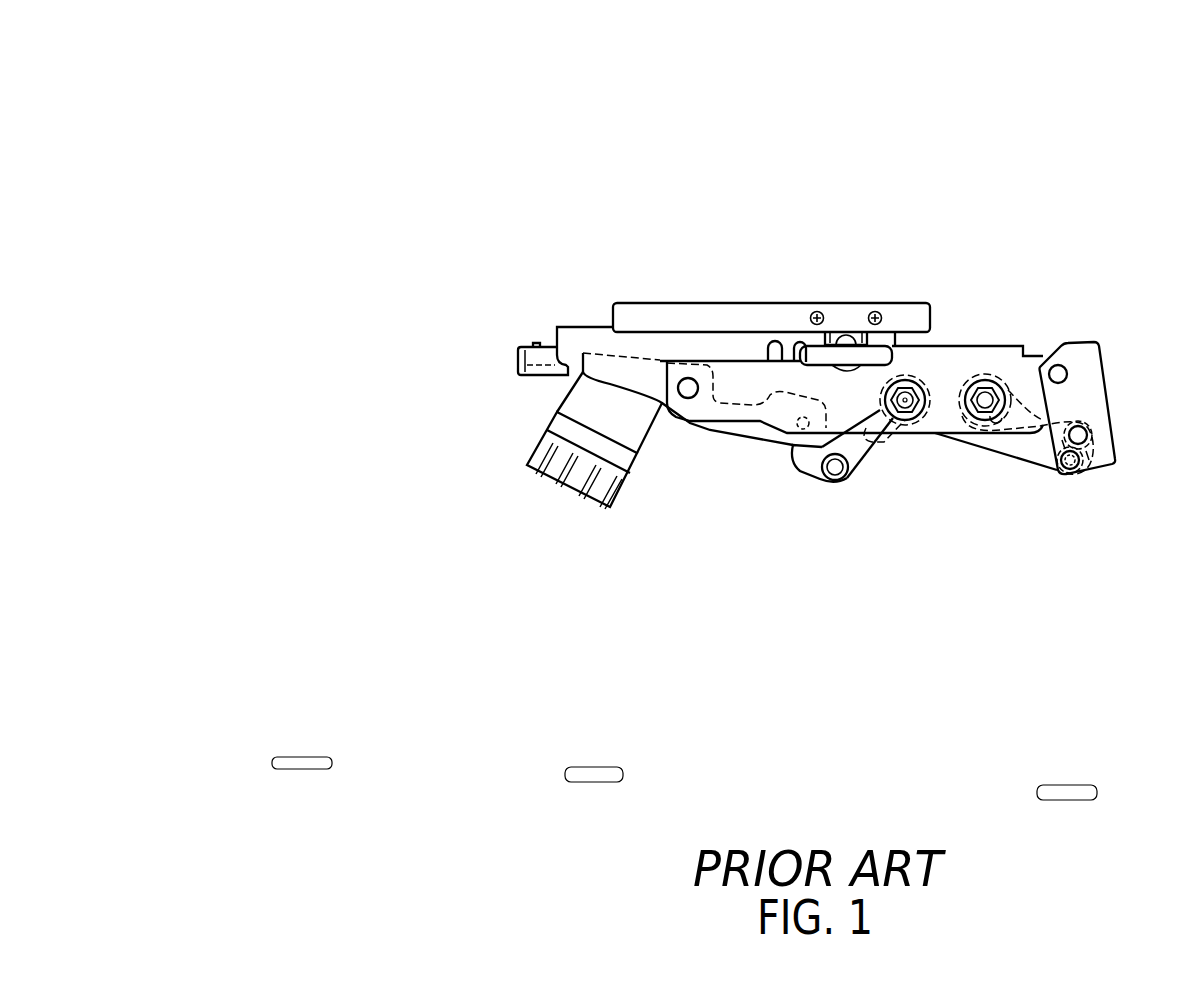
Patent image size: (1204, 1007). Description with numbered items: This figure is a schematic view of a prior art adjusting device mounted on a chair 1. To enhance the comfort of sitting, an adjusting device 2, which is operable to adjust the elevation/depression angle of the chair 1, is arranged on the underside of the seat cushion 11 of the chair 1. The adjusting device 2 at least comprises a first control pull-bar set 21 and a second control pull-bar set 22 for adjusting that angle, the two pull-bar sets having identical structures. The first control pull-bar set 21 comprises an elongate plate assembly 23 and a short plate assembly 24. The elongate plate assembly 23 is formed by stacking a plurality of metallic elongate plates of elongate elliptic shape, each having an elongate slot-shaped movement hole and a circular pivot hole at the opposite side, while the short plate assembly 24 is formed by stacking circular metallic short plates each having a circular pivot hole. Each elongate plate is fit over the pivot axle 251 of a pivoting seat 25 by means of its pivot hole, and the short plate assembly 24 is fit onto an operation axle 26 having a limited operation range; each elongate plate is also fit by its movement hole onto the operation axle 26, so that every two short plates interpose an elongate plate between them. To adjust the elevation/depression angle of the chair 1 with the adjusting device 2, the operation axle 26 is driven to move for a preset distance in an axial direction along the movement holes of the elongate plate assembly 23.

The chair 1 is at (268, 123).
The seat cushion 11 is at (257, 248).
The adjusting device 2 is at (1108, 502).
The first control pull-bar set 21 is at (900, 452).
The second control pull-bar set 22 is at (1028, 447).
The elongate plate assembly 23 is at (863, 452).
The short plate assembly 24 is at (922, 415).
The pivoting seat 25 is at (808, 458).
The pivot axle 251 is at (838, 480).
The operation axle 26 is at (907, 400).